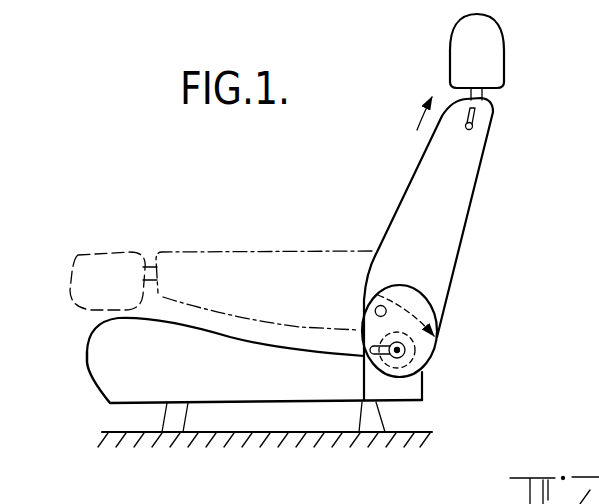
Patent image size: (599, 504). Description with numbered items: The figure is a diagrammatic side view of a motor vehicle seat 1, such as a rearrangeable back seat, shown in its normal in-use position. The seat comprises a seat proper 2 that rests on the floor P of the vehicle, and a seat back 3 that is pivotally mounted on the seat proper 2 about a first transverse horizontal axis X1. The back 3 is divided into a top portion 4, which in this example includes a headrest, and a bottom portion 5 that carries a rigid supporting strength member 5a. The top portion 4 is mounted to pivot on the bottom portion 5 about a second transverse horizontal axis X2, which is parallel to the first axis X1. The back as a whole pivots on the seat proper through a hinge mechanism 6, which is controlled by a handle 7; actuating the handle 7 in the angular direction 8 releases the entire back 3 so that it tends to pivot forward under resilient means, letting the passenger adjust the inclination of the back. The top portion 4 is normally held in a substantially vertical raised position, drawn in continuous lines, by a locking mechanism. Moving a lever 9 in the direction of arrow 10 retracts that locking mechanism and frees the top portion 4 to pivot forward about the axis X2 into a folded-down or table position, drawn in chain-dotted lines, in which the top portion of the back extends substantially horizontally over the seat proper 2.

The motor vehicle seat 1 is at (367, 220).
The seat proper 2 is at (117, 343).
The seat back 3 is at (477, 200).
The top portion of the back 4 is at (453, 155).
The bottom portion of the back 5 is at (410, 305).
The supporting strength member 5a is at (405, 320).
The hinge mechanism 6 is at (410, 353).
The handle 7 is at (371, 395).
The angular direction 8 is at (328, 340).
The lever 9 is at (478, 125).
The arrow 10 is at (418, 116).
The first transverse horizontal axis X1 is at (405, 355).
The second transverse horizontal axis X2 is at (376, 308).
The floor P is at (421, 432).